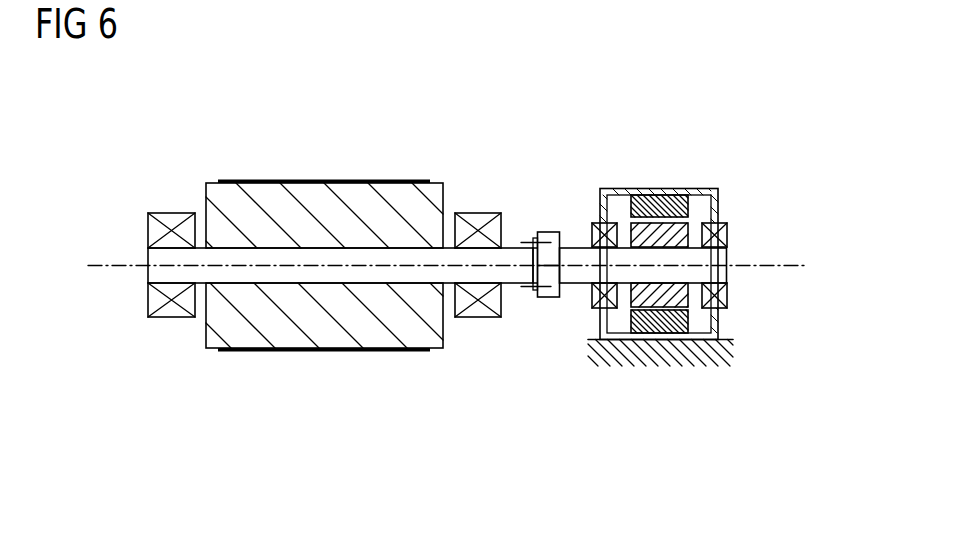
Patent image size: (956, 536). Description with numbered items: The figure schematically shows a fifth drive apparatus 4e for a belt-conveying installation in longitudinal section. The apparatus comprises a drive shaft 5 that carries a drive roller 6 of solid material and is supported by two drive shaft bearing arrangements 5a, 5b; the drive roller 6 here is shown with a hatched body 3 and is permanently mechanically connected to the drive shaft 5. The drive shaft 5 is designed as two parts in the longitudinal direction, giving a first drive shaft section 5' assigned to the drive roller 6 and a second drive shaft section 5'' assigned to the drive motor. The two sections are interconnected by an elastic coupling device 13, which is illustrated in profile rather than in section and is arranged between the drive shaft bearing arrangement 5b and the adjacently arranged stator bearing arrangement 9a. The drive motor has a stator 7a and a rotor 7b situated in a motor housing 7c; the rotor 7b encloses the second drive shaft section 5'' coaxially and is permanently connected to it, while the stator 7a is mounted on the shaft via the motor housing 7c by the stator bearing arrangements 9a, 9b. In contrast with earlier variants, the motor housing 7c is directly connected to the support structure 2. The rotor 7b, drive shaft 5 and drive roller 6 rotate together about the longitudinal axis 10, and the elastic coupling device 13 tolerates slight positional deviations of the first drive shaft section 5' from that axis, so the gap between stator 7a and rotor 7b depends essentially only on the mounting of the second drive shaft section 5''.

The fifth drive apparatus 4e is at (228, 132).
The rotor 3 is at (318, 186).
The drive roller 6 is at (380, 188).
The drive shaft 5 is at (312, 252).
The drive shaft bearing arrangement 5a is at (170, 318).
The drive shaft bearing arrangement 5b is at (480, 318).
The first drive shaft section 5' is at (522, 300).
The elastic coupling device 13 is at (550, 297).
The second drive shaft section 5'' is at (674, 275).
The stator 7a is at (688, 207).
The rotor 7b is at (642, 237).
The motor housing 7c is at (685, 190).
The stator bearing arrangement 9a is at (597, 222).
The stator bearing arrangement 9b is at (728, 295).
The longitudinal axis 10 is at (787, 263).
The support structure 2 is at (657, 352).